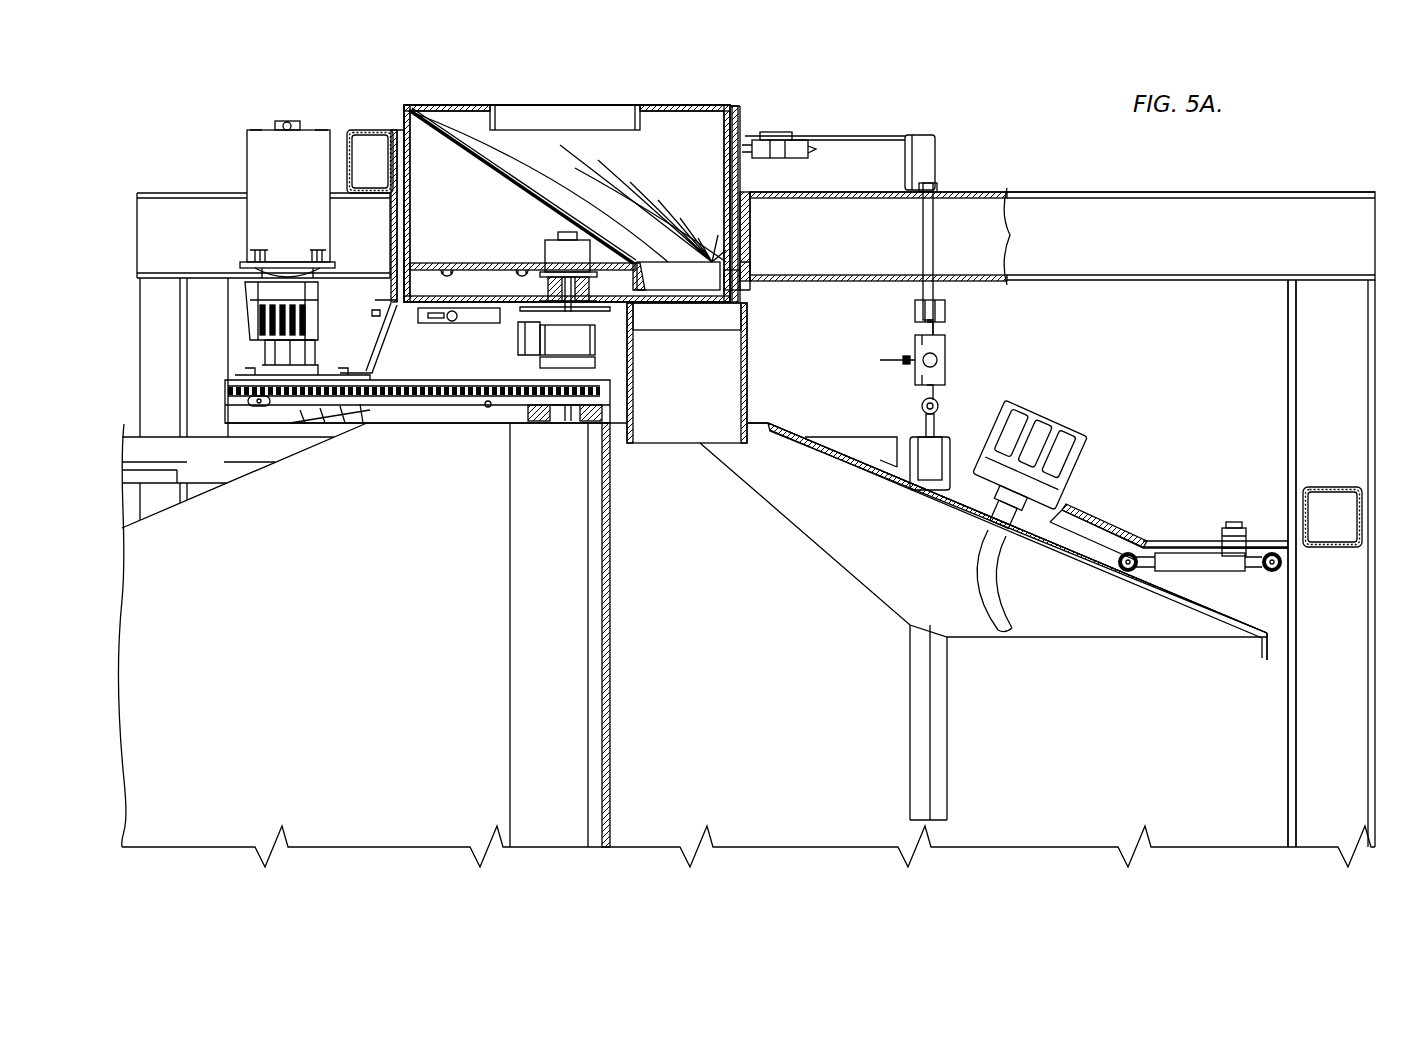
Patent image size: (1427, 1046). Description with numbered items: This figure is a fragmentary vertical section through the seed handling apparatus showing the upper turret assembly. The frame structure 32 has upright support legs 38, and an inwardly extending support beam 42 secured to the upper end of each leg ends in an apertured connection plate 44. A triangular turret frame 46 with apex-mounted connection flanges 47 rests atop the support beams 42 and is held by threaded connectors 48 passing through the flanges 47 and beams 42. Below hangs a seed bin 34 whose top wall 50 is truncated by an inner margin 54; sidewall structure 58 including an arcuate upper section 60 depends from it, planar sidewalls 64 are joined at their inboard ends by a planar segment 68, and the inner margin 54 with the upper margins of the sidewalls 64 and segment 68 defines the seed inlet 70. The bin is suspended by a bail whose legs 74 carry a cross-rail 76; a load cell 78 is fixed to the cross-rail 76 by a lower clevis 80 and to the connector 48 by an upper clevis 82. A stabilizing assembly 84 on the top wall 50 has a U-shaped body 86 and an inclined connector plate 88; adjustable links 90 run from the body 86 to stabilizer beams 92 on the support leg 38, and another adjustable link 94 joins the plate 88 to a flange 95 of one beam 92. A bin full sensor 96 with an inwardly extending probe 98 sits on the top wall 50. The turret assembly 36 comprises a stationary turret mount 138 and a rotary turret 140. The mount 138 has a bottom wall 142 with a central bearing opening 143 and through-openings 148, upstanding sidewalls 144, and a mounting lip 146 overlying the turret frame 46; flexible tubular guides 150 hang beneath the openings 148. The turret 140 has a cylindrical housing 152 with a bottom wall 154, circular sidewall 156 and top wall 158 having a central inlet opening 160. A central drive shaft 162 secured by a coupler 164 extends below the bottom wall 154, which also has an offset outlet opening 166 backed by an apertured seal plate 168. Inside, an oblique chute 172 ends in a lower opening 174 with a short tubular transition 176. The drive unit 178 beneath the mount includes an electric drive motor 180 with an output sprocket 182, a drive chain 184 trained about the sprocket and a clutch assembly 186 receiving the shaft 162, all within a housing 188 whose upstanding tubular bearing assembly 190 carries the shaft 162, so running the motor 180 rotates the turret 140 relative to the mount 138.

The frame structure 32 is at (1106, 188).
The seed bin 34 is at (1263, 631).
The rotary turret assembly 36 is at (397, 93).
The support leg 38 is at (150, 328).
The support beam 42 is at (185, 212).
The connection plate 44 is at (752, 250).
The turret frame 46 is at (878, 133).
The connection flange 47 is at (927, 146).
The threaded connector 48 is at (933, 238).
The top wall 50 is at (1175, 596).
The inner margin 54 is at (779, 418).
The sidewall structure 58 is at (1290, 690).
The arcuate upper section 60 is at (1265, 736).
The sidewall 64 is at (746, 645).
The planar segment 68 is at (609, 656).
The seed inlet 70 is at (758, 424).
The leg 74 is at (945, 716).
The cross-rail 76 is at (950, 449).
The load cell 78 is at (945, 349).
The lower clevis 80 is at (922, 411).
The upper clevis 82 is at (917, 291).
The stabilizing assembly 84 is at (1125, 518).
The U-shaped body 86 is at (1086, 522).
The connector plate 88 is at (1189, 541).
The adjustable link 90 is at (1193, 576).
The stabilizer beam 92 is at (1328, 487).
The adjustable link 94 is at (1237, 527).
The flange 95 is at (1259, 540).
The bin full sensor 96 is at (1042, 416).
The probe 98 is at (993, 588).
The turret mount 138 is at (380, 128).
The rotary turret 140 is at (658, 106).
The bottom wall 142 is at (455, 322).
The bearing opening 143 is at (548, 291).
The sidewall 144 is at (392, 242).
The mounting lip 146 is at (765, 131).
The through-opening 148 is at (672, 305).
The flexible tubular guide 150 is at (680, 434).
The cylindrical housing 152 is at (740, 105).
The bottom wall 154 is at (458, 263).
The sidewall 156 is at (410, 193).
The top wall 158 is at (424, 105).
The inlet opening 160 is at (530, 105).
The drive shaft 162 is at (568, 424).
The coupler 164 is at (548, 243).
The outlet opening 166 is at (750, 222).
The seal plate 168 is at (742, 289).
The chute 172 is at (610, 186).
The lower opening 174 is at (670, 243).
The tubular transition 176 is at (700, 292).
The drive unit 178 is at (420, 425).
The electric drive motor 180 is at (268, 153).
The output sprocket 182 is at (275, 408).
The drive chain 184 is at (462, 398).
The clutch assembly 186 is at (548, 342).
The housing 188 is at (370, 355).
The bearing assembly 190 is at (505, 272).